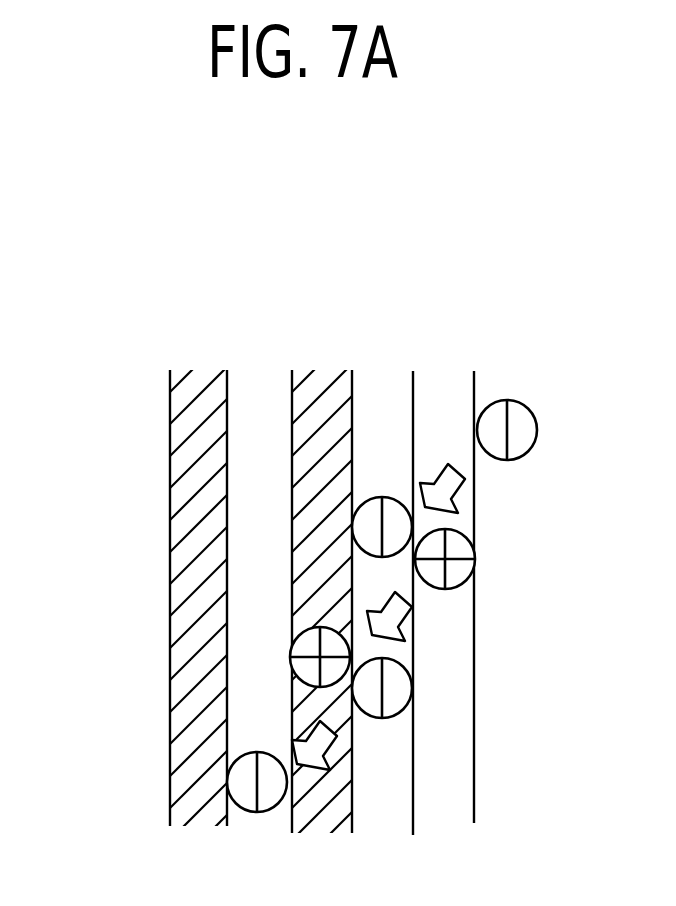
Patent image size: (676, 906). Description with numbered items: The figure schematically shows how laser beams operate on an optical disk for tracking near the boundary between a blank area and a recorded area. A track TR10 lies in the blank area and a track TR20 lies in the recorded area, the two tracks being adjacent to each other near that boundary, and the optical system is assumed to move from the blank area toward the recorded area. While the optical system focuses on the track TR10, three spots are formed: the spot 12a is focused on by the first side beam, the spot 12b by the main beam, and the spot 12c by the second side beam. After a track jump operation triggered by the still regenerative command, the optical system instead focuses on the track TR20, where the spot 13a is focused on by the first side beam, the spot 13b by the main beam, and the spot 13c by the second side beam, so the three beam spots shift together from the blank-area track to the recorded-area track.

The track TR10 is at (440, 383).
The track TR20 is at (307, 372).
The spot 12a is at (520, 438).
The spot 12b is at (457, 572).
The spot 12c is at (402, 695).
The spot 13a is at (365, 513).
The spot 13b is at (307, 643).
The spot 13c is at (240, 780).